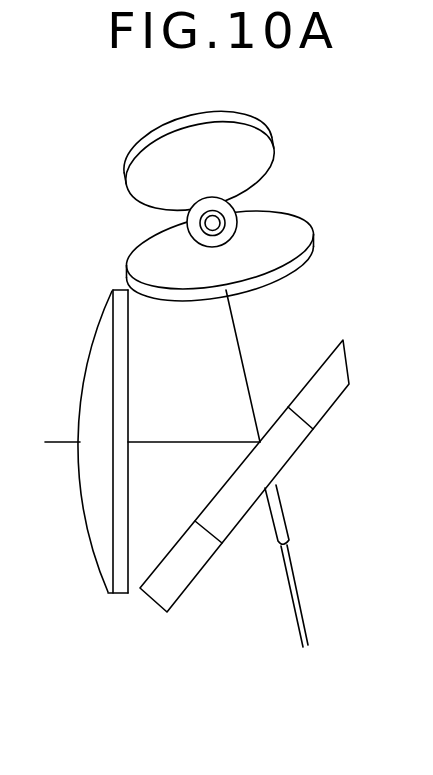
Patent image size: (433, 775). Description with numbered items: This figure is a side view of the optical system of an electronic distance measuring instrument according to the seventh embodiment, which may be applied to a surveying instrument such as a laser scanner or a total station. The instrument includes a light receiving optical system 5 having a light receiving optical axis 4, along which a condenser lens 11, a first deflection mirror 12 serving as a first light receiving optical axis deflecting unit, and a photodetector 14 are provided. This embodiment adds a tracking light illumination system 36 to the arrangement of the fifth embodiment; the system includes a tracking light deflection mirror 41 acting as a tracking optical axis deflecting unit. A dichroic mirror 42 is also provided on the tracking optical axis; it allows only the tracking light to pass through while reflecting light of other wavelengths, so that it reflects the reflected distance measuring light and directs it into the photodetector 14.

The tracking light deflection mirror 41 is at (262, 121).
The dichroic mirror 42 is at (308, 224).
The tracking light illumination system 36 is at (233, 203).
The light receiving optical axis 4 is at (168, 442).
The condenser lens 11 is at (93, 547).
The first deflection mirror 12 is at (203, 567).
The photodetector 14 is at (276, 484).
The light receiving optical system 5 is at (277, 340).